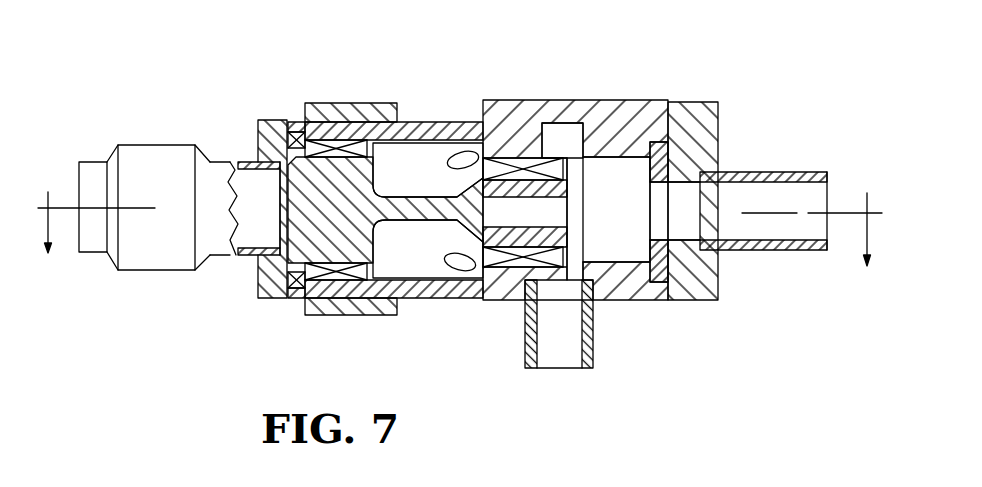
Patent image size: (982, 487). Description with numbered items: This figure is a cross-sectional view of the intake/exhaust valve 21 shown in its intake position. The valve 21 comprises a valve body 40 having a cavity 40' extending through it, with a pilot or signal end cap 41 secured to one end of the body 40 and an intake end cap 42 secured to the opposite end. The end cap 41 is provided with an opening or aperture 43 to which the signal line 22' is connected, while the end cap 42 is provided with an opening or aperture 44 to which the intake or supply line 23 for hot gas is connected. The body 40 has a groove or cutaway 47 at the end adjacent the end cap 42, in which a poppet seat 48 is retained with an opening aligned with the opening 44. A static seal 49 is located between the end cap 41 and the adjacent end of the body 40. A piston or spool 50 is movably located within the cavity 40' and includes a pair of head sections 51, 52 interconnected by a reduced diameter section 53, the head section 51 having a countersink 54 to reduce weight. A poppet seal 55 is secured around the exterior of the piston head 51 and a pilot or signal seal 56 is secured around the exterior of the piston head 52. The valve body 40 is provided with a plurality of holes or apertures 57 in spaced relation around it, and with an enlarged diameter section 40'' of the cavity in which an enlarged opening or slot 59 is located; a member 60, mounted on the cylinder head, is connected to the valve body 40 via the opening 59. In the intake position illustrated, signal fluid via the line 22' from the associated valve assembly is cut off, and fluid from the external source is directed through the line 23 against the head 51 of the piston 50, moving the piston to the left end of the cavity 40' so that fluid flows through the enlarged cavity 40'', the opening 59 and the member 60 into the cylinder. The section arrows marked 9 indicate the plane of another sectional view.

The section line 9- 9 is at (460, 247).
The intake/exhaust valve 21 is at (188, 101).
The signal line 22' is at (168, 240).
The fluid supply line 23 is at (775, 182).
The valve body 40 is at (576, 177).
The cavity 40' is at (616, 209).
The enlarged diameter section of cavity 40'' is at (581, 105).
The pilot or signal end cap 41 is at (326, 181).
The intake end cap 42 is at (721, 193).
The opening or aperture 43 is at (250, 187).
The opening or aperture 44 is at (712, 183).
The groove or cutaway 47 is at (687, 118).
The poppet seat 48 is at (692, 292).
The static seal 49 is at (276, 240).
The piston or spool 50 is at (413, 185).
The head section 51 is at (472, 246).
The head section 52 is at (329, 238).
The reduced diameter section 53 is at (428, 249).
The countersink 54 is at (558, 205).
The poppet seal 55 is at (523, 159).
The pilot or signal seal 56 is at (343, 166).
The holes or apertures 57 is at (385, 204).
The enlarged opening or slot 59 is at (603, 259).
The member 60 is at (529, 331).